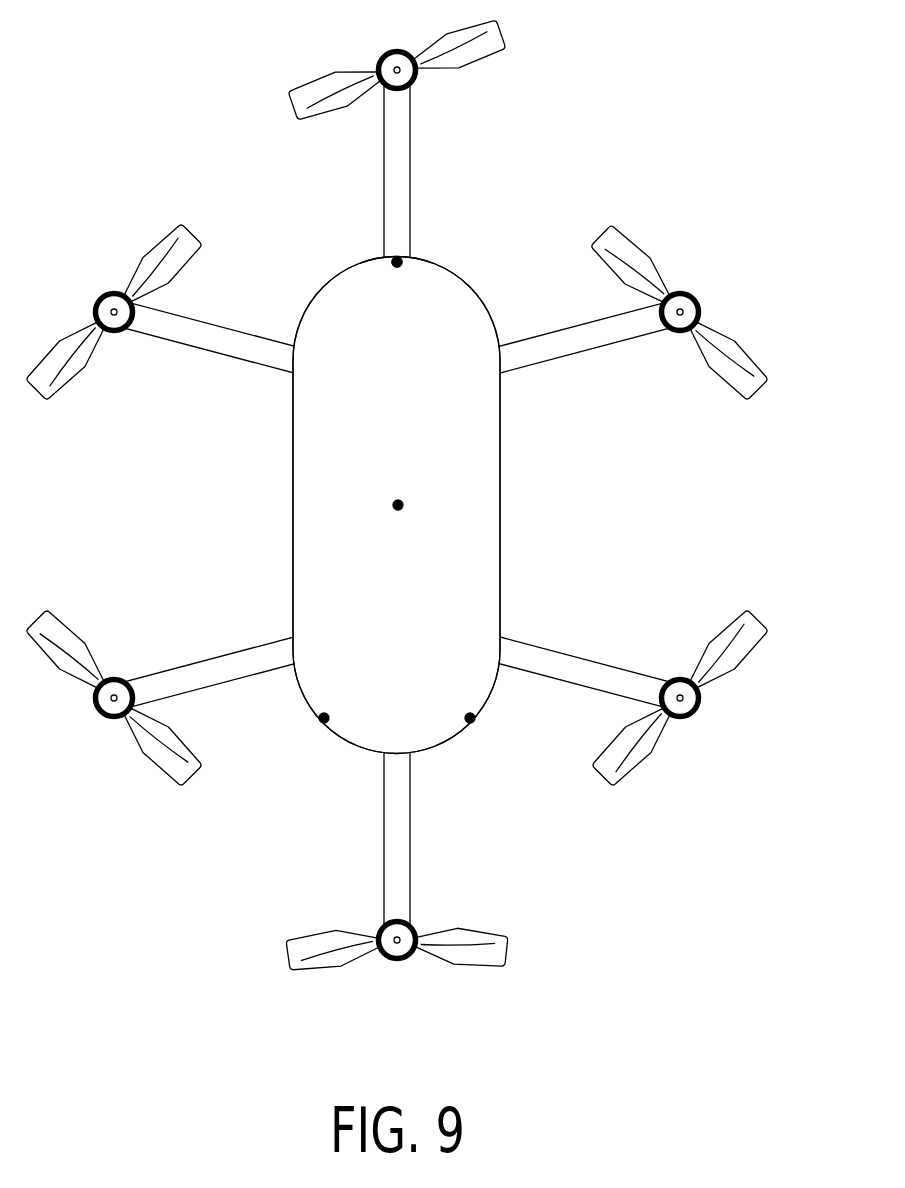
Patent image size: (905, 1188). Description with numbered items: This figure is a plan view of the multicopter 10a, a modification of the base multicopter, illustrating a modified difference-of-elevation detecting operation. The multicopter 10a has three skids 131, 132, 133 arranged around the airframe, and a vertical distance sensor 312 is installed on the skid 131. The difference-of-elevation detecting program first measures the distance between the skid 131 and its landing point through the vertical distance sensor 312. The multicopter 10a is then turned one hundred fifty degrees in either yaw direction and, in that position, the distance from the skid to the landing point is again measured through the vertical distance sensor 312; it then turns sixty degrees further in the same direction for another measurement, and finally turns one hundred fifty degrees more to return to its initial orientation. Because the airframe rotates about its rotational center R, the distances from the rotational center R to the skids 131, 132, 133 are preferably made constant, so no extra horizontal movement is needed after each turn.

The multicopter 10a is at (149, 63).
The skid 131 is at (397, 262).
The vertical distance sensor 312 is at (397, 262).
The skid 132 is at (470, 718).
The skid 133 is at (324, 718).
The rotational center R is at (398, 505).